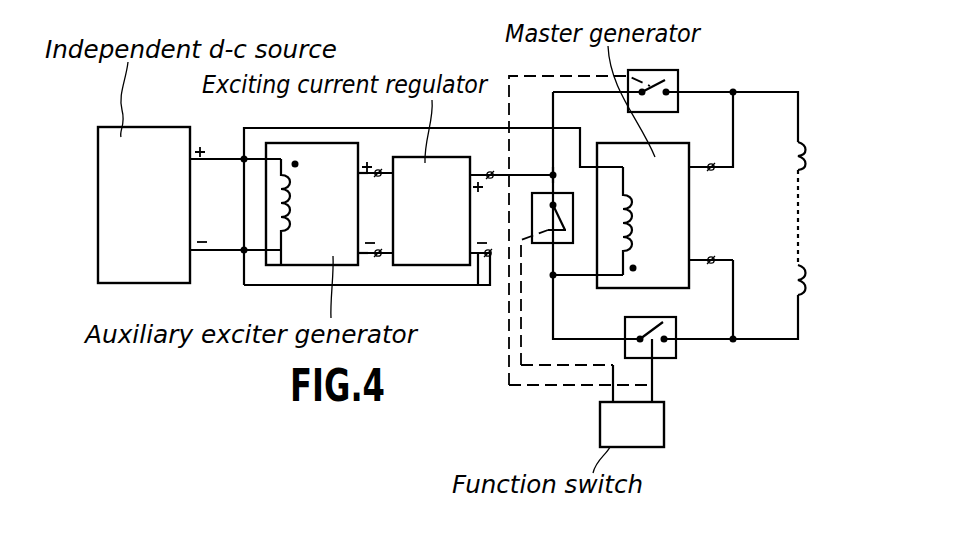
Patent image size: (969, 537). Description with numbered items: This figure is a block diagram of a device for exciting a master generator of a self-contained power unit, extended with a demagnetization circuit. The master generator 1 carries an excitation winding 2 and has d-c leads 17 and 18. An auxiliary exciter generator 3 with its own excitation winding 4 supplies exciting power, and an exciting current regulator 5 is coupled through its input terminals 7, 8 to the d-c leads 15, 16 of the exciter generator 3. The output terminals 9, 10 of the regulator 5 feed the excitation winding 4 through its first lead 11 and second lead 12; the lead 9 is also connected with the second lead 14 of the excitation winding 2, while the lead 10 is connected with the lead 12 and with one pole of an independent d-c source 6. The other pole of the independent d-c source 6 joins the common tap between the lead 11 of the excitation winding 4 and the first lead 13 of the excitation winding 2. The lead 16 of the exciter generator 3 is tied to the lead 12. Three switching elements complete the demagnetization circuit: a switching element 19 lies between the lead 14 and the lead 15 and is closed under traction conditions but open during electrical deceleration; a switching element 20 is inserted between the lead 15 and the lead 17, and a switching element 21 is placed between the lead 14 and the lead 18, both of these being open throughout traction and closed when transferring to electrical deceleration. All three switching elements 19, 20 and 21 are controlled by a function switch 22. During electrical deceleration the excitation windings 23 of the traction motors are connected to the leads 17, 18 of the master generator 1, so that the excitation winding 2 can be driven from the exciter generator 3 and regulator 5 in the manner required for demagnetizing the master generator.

The master generator 1 is at (643, 215).
The excitation winding 2 is at (628, 193).
The auxiliary exciter generator 3 is at (312, 204).
The excitation winding 4 is at (290, 266).
The exciting current regulator 5 is at (431, 211).
The independent d-c source 6 is at (144, 205).
The input terminal 7 is at (380, 170).
The input terminal 8 is at (378, 257).
The output terminal 9 is at (490, 171).
The output terminal 10 is at (488, 257).
The first lead 11 is at (244, 162).
The second lead 12 is at (244, 248).
The first lead 13 is at (590, 176).
The second lead 14 is at (592, 278).
The d-c lead 15 is at (362, 176).
The d-c lead 16 is at (362, 250).
The d-c lead 17 is at (712, 170).
The d-c lead 18 is at (713, 258).
The switching element 19 is at (547, 244).
The switching element 20 is at (678, 80).
The switching element 21 is at (676, 322).
The function switch 22 is at (632, 424).
The excitation windings of traction motors 23 is at (800, 147).